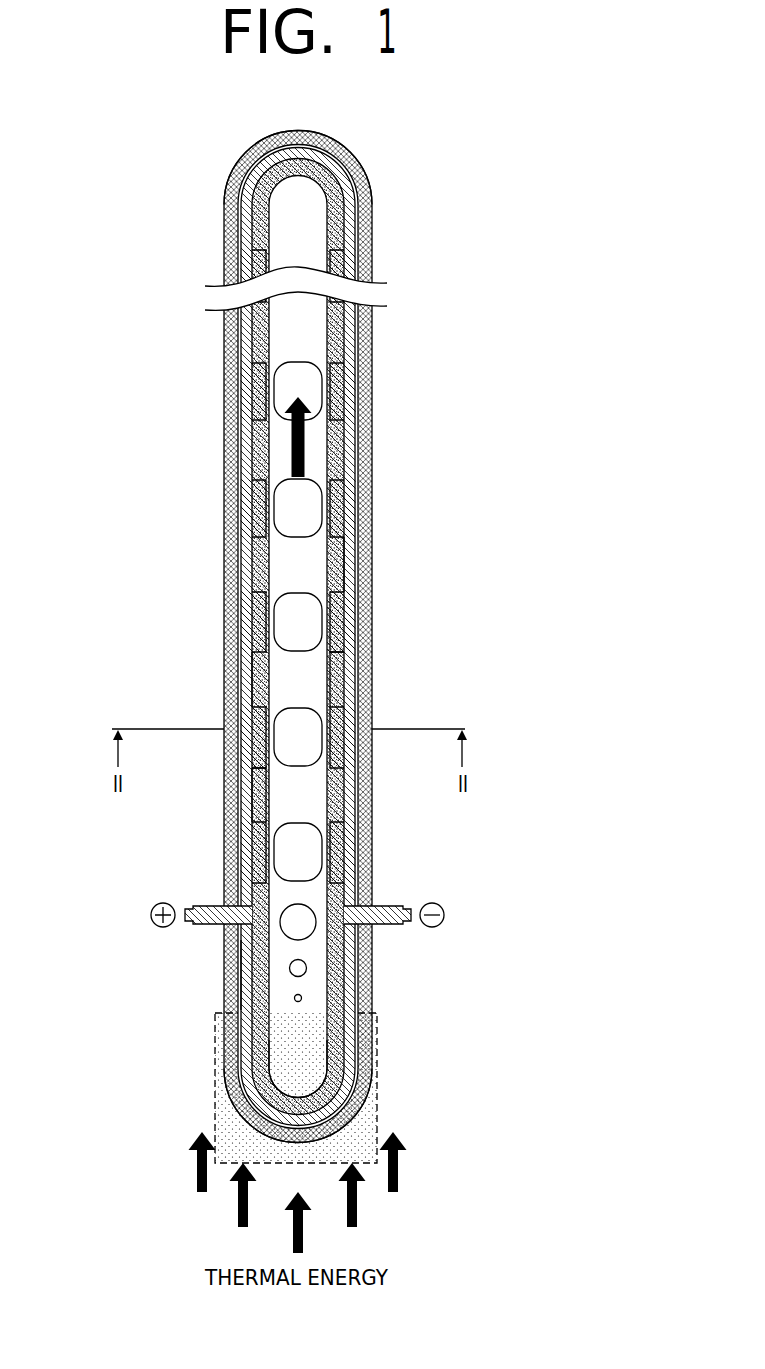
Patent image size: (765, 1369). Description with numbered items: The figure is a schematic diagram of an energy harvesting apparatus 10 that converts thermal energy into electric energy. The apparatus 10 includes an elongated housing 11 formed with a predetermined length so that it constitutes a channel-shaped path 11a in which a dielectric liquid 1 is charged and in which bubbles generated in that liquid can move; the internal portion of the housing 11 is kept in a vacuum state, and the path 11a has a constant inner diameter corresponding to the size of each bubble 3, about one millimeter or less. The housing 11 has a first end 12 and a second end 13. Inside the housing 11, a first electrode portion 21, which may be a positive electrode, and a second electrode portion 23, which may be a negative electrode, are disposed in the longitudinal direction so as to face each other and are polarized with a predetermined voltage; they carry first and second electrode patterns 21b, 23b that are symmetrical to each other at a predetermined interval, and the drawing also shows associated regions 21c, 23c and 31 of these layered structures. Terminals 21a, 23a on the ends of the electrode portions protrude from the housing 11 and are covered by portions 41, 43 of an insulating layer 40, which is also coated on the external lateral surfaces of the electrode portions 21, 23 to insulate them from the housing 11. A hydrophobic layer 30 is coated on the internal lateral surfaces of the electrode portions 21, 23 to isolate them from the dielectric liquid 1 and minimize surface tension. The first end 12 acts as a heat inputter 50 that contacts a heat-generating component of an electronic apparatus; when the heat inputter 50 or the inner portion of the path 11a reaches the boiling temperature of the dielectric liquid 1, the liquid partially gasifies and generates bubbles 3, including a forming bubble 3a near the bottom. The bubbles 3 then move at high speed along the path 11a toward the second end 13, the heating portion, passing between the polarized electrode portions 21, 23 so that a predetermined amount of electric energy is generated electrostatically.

The energy harvesting apparatus 10 is at (221, 117).
The dielectric liquid 1 is at (290, 342).
The bubble 3 is at (290, 493).
The working fluid bubble 3a is at (342, 893).
The housing 11 is at (375, 415).
The path 11a is at (302, 896).
The first end 12 is at (378, 1108).
The second end 13 is at (384, 160).
The first electrode portion 21 is at (228, 605).
The terminal 21a is at (215, 906).
The first electrode pattern 21b is at (277, 702).
The first electrode protrusion 21c is at (262, 778).
The second electrode portion 23 is at (365, 490).
The terminal 23a is at (397, 906).
The second electrode pattern 23b is at (326, 624).
The second electrode protrusion 23c is at (343, 680).
The hydrophobic layer 30 is at (232, 973).
The insulating portion 31 is at (262, 806).
The insulating layer 40 is at (370, 460).
The portion of insulating layer 41 is at (205, 925).
The portion of insulating layer 43 is at (390, 925).
The heat inputter 50 is at (215, 1090).